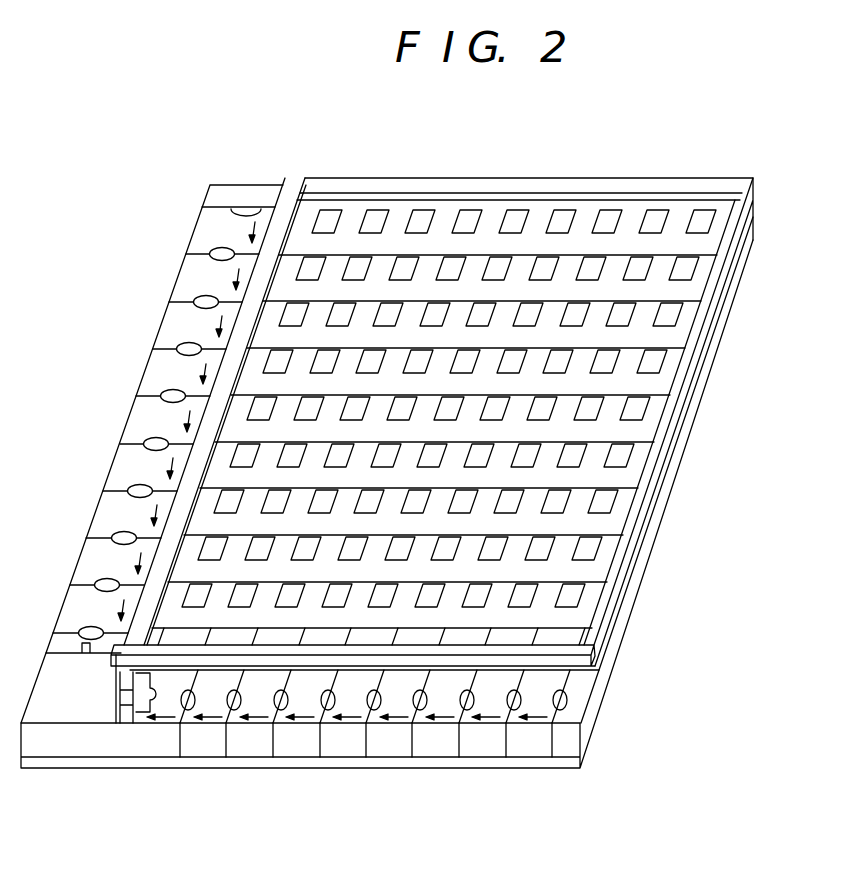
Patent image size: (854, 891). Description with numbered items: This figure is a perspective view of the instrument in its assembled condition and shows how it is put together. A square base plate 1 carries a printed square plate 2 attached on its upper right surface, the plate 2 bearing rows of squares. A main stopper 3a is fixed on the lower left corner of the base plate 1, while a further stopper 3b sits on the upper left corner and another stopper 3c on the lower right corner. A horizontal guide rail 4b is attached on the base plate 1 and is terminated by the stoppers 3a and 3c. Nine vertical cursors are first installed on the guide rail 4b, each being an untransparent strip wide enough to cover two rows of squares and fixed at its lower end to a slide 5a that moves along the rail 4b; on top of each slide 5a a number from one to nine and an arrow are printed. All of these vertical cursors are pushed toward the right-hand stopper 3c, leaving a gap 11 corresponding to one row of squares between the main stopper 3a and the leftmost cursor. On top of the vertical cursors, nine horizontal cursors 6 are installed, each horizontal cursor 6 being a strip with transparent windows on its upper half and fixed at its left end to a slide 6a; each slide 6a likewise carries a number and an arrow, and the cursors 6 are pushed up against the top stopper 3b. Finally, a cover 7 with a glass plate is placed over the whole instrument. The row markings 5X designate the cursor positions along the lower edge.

The base plate 1 is at (310, 766).
The printed square plate 2 is at (652, 515).
The main stopper 3a is at (70, 715).
The stopper 3b is at (248, 200).
The stopper 3c is at (580, 707).
The guide rail 4b is at (128, 725).
The slide 5a is at (513, 735).
The bottom row slots 5X is at (360, 636).
The horizontal cursor 6 is at (440, 235).
The slide 6a is at (133, 448).
The cover 7 is at (612, 185).
The gap 11 is at (118, 735).